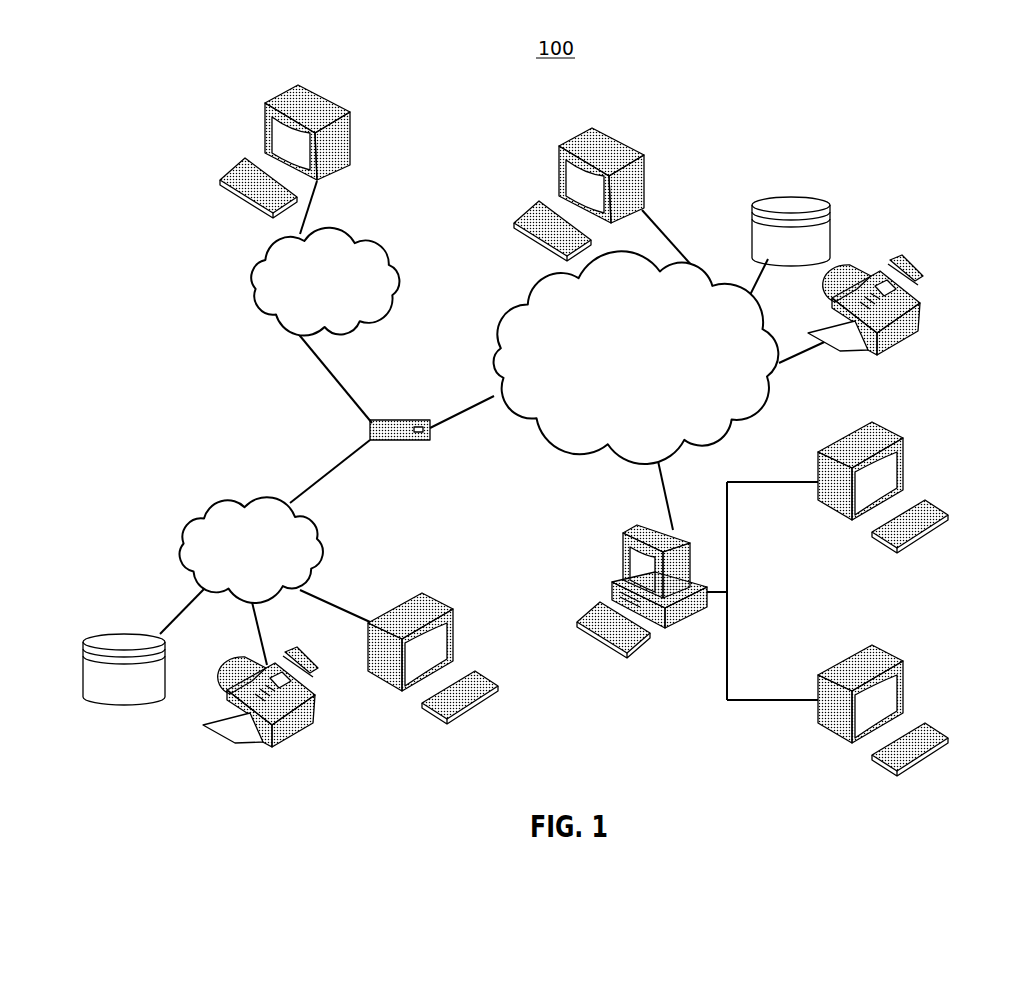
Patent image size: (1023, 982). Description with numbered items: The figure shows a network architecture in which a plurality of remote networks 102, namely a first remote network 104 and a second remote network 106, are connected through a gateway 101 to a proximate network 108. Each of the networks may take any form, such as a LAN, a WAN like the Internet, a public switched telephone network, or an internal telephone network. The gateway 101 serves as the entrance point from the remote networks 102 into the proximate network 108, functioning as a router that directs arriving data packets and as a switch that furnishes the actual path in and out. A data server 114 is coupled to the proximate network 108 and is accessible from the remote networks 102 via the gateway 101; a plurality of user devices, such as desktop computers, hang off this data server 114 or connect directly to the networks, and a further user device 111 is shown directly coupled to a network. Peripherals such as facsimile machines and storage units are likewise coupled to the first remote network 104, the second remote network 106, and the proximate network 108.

The gateway 101 is at (398, 418).
The remote networks 102 is at (238, 353).
The first remote network 104 is at (178, 528).
The second remote network 106 is at (400, 288).
The proximate network 108 is at (747, 416).
The user device 111 is at (645, 191).
The data server 114 is at (620, 553).